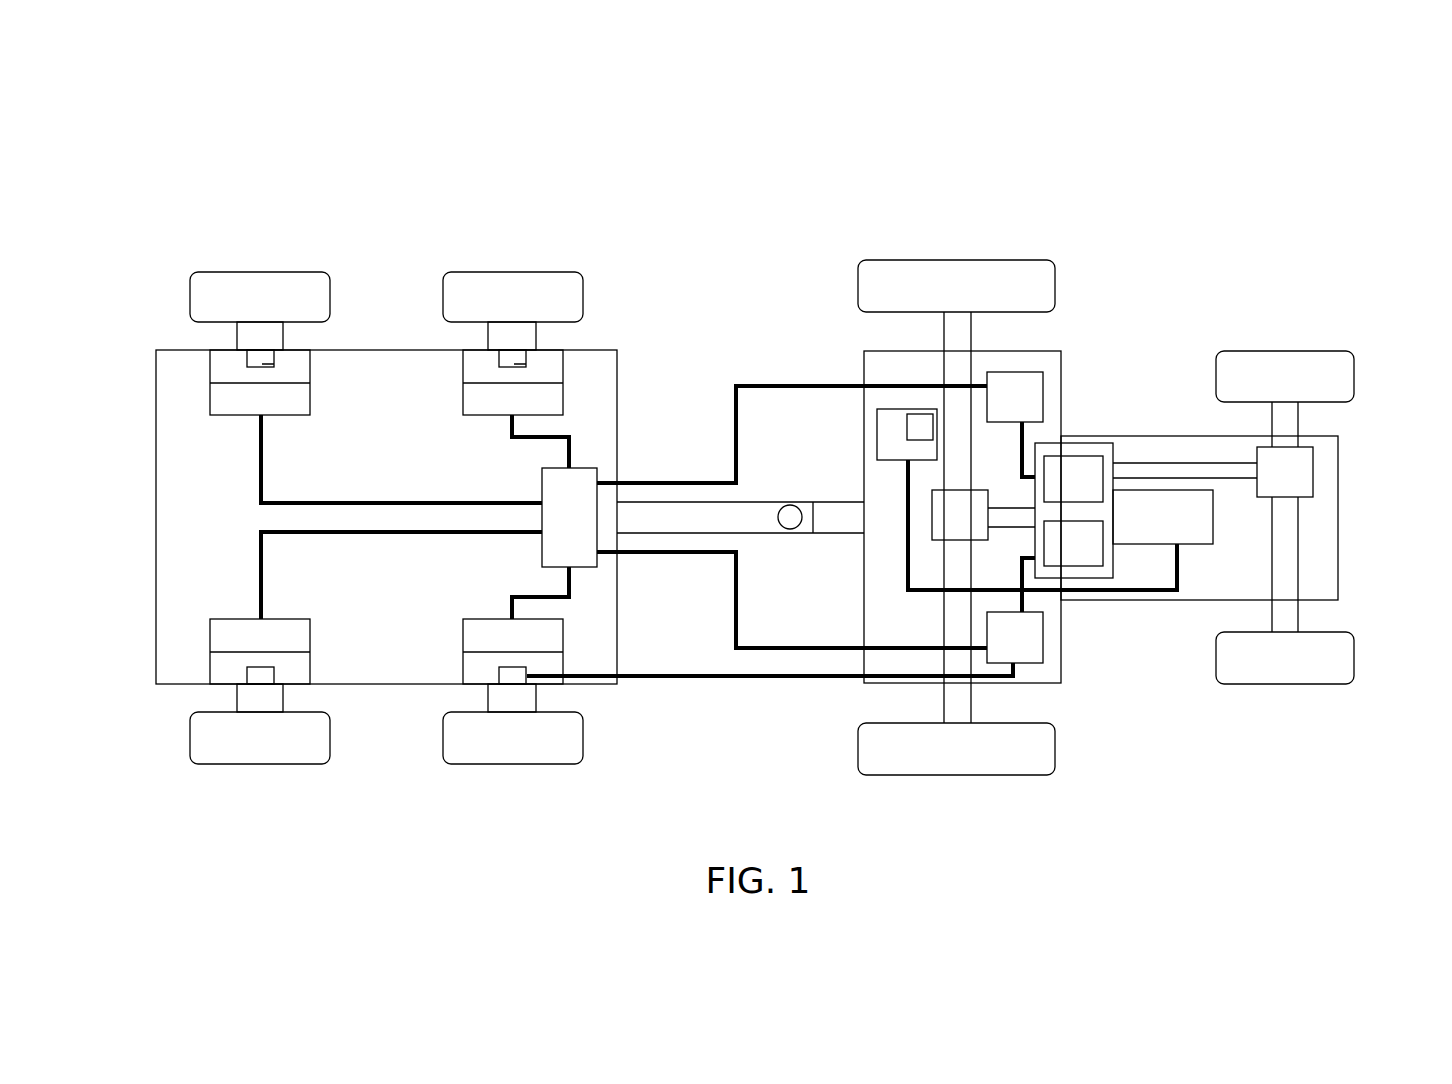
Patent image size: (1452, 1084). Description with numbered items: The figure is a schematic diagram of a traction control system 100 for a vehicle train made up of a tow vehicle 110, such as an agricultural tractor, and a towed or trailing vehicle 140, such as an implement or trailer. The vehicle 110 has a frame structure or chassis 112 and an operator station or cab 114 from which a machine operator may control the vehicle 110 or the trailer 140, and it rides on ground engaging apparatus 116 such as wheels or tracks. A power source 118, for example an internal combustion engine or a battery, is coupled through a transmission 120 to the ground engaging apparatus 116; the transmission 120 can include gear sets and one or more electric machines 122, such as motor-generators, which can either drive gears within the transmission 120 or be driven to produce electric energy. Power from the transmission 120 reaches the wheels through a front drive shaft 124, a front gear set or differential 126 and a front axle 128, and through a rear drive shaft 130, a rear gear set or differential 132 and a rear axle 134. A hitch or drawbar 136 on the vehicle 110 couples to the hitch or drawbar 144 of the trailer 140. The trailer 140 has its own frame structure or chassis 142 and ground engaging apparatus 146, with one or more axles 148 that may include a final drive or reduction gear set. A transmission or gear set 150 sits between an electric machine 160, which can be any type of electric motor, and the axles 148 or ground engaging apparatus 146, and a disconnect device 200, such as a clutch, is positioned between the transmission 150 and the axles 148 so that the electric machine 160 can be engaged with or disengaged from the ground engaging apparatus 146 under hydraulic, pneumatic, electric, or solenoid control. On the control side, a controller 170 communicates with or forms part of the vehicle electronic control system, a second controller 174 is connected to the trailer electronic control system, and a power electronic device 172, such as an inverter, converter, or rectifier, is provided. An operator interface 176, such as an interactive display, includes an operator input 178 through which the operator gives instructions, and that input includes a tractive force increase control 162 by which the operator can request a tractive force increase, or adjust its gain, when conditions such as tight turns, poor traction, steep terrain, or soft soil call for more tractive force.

The traction control system 100 is at (698, 159).
The tow vehicle 110 is at (1160, 220).
The frame structure or chassis 112 is at (1312, 575).
The operator station or cab 114 is at (1033, 673).
The ground engaging apparatus 116 is at (948, 747).
The power source 118 is at (1143, 529).
The transmission 120 is at (1093, 450).
The electric machine 122 is at (1054, 492).
The front drive shaft 124 is at (1164, 472).
The front gear set or differential 126 is at (1266, 482).
The front axle 128 is at (1287, 545).
The rear drive shaft 130 is at (1008, 518).
The rear gear set or differential 132 is at (941, 526).
The rear axle 134 is at (958, 622).
The hitch or drawbar 136 is at (833, 517).
The towed or trailing vehicle 140 is at (381, 210).
The frame structure or chassis 142 is at (375, 636).
The hitch or drawbar 144 is at (717, 515).
The ground engaging apparatus 146 is at (257, 735).
The axle 148 is at (262, 337).
The transmission or gear set 150 is at (470, 357).
The electric machine 160 is at (517, 399).
The tractive force increase control 162 is at (923, 423).
The controller 170 is at (996, 649).
The power electronic device 172 is at (996, 411).
The second controller 174 is at (550, 526).
The operator interface 176 is at (900, 448).
The operator input 178 is at (910, 427).
The disconnect device 200 is at (500, 366).